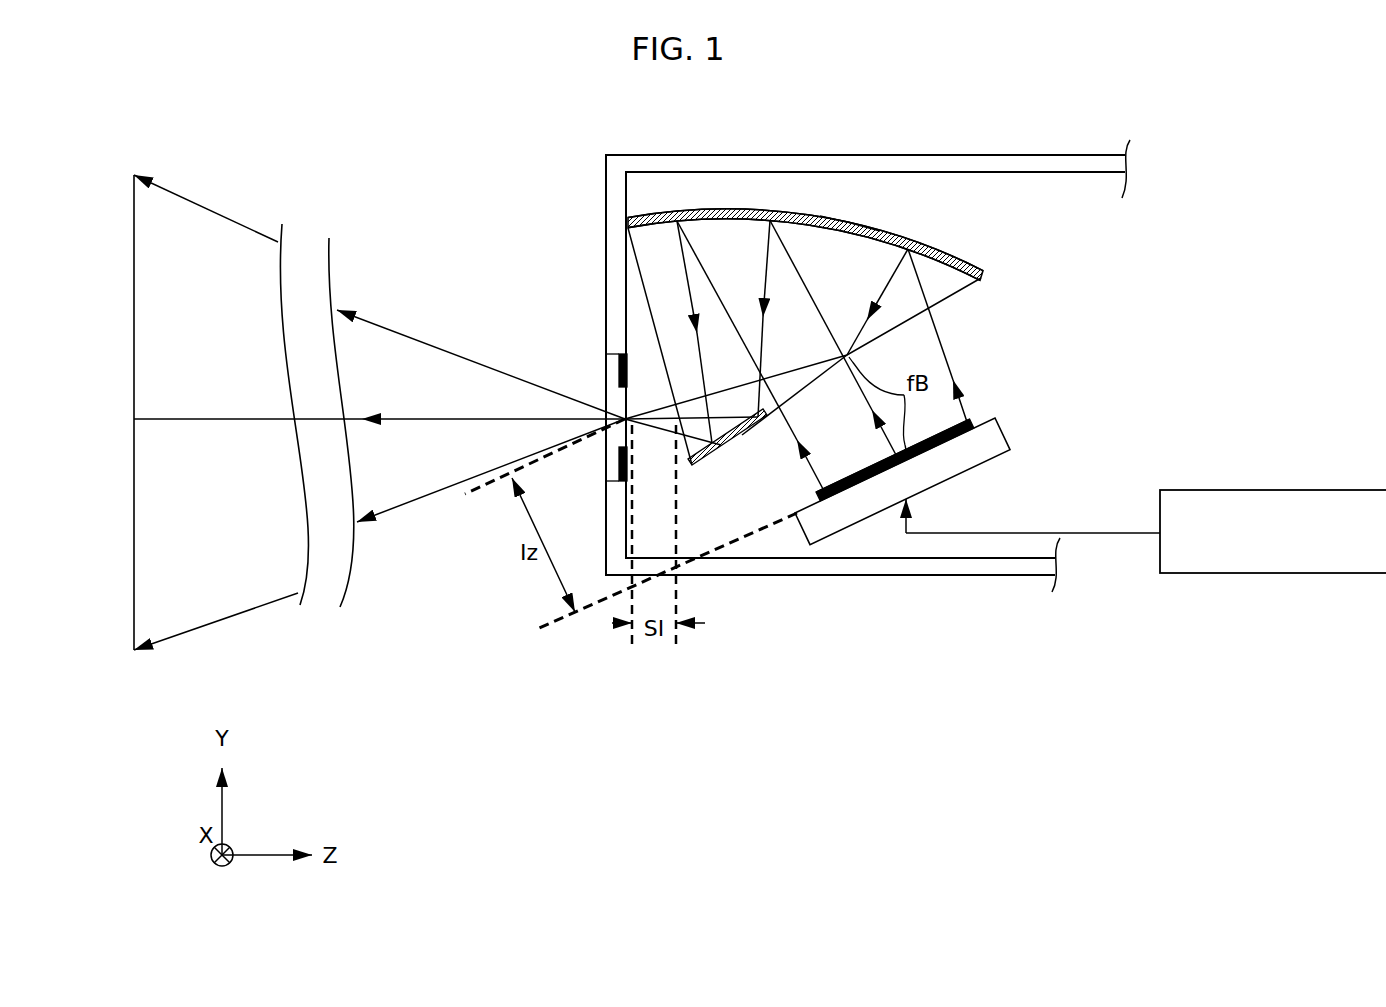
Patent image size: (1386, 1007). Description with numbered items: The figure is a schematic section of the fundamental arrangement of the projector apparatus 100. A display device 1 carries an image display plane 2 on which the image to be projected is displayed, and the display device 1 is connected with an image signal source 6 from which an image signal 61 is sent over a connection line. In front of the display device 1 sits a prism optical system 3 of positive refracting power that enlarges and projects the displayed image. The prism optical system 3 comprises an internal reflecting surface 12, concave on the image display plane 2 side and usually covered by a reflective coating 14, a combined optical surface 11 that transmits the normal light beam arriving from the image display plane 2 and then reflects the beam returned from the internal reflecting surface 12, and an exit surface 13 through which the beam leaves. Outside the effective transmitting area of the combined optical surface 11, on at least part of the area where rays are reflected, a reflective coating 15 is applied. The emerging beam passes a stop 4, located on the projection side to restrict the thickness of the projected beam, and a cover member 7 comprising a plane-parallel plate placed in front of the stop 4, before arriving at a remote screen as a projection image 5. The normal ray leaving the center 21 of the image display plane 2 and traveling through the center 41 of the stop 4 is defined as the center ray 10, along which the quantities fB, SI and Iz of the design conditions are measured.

The display device 1 is at (993, 440).
The image display plane 2 is at (940, 438).
The center of the image display plane 21 is at (898, 453).
The prism optical system 3 is at (947, 268).
The combined optical surface 11 is at (968, 281).
The internal reflecting surface 12 is at (858, 230).
The reflective coating 14 is at (797, 212).
The exit surface 13 is at (637, 286).
The stop 4 is at (620, 360).
The center of the stop 41 is at (611, 411).
The cover member 7 is at (611, 456).
The reflective coating 15 is at (706, 454).
The projection image 5 is at (130, 318).
The center ray 10 is at (432, 421).
The image signal source 6 is at (1338, 490).
The image signal 61 is at (1090, 532).
The projector apparatus 100 is at (831, 611).